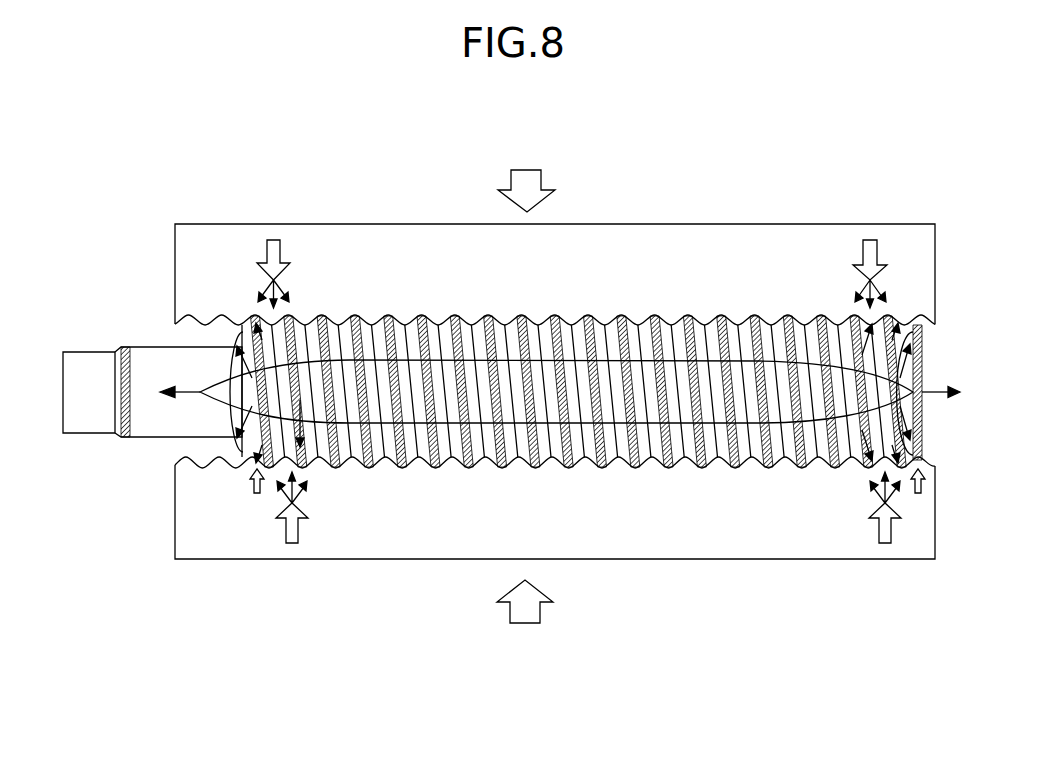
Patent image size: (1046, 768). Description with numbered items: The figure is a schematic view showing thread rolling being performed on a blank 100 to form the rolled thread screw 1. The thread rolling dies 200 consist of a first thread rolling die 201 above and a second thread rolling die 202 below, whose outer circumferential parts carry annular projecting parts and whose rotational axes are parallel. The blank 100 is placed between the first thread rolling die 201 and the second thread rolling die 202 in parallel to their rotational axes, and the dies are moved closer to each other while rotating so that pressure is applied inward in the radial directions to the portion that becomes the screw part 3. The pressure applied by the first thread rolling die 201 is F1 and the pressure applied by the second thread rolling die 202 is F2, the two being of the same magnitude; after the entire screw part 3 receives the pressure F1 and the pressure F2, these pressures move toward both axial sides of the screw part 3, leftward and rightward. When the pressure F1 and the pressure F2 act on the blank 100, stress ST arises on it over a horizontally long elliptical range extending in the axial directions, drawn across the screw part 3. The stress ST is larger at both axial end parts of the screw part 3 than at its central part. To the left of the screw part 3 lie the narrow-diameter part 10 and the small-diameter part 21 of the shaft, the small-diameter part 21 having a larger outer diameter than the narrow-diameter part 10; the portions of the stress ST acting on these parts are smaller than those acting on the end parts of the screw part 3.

The rolled thread screw 1 is at (560, 391).
The blank 100 is at (560, 475).
The screw part 3 is at (680, 440).
The stress ST is at (379, 425).
The narrow-diameter part 10 is at (80, 418).
The small-diameter part 21 is at (152, 423).
The thread rolling dies 200 is at (555, 383).
The first thread rolling die 201 is at (793, 236).
The second thread rolling die 202 is at (793, 540).
The pressure F1 is at (530, 170).
The pressure F2 is at (520, 625).